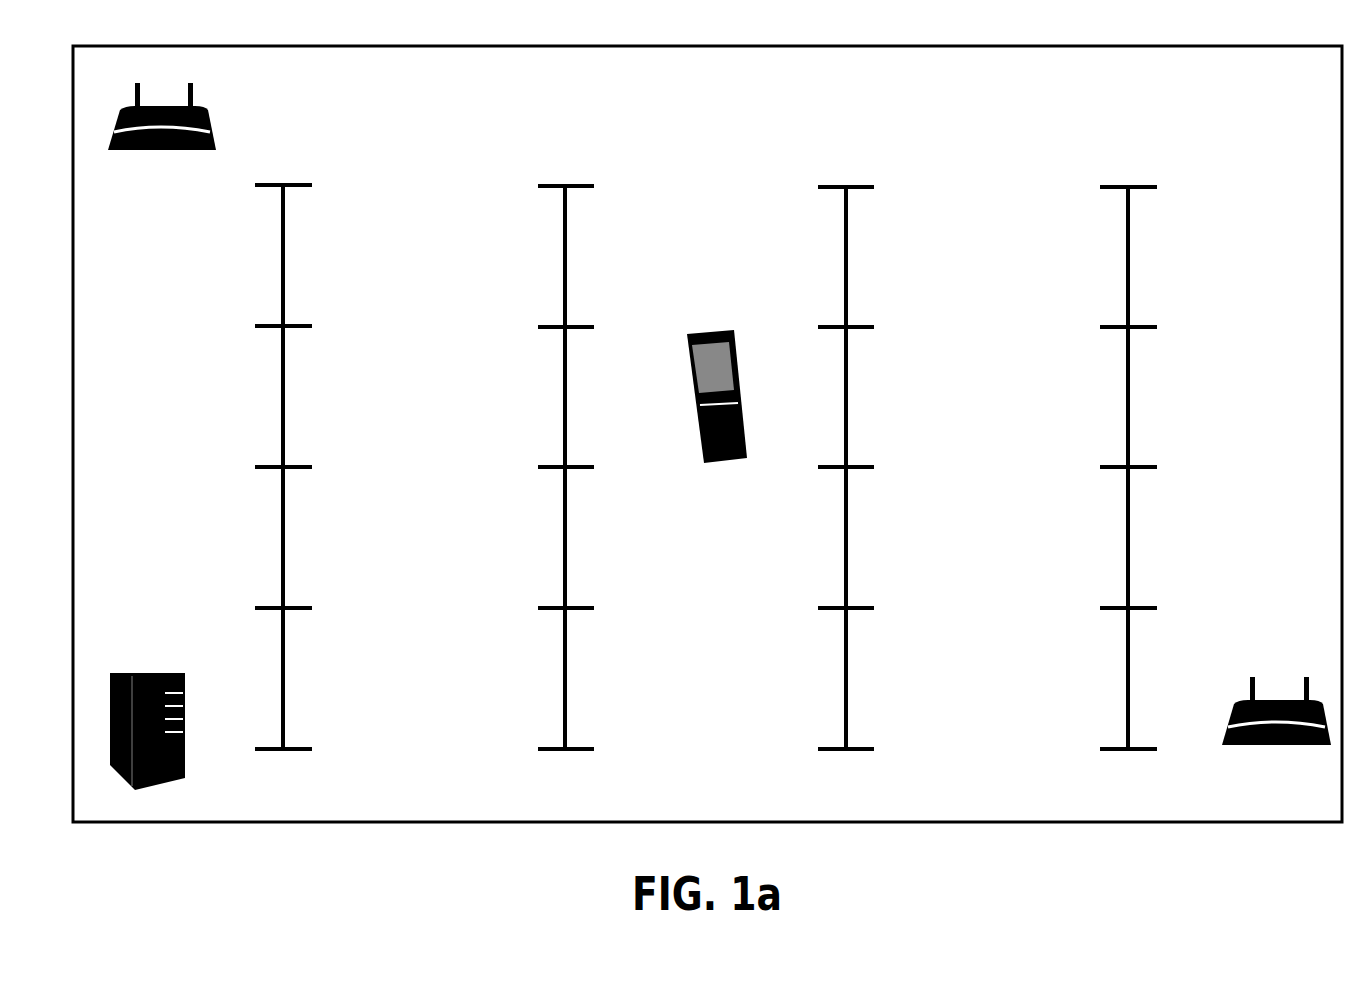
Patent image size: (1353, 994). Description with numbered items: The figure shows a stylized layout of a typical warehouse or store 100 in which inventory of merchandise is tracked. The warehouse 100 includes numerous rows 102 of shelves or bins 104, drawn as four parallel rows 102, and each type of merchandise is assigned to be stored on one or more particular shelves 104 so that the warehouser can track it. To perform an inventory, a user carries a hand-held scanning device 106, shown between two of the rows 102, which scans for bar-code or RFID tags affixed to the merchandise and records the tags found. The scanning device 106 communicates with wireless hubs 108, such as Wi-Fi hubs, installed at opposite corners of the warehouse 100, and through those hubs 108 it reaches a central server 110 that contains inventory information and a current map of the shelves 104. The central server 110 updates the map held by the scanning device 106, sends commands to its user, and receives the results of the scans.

The warehouse or store 100 is at (1331, 84).
The rows 102 is at (285, 182).
The shelves or bins 104 is at (562, 418).
The hand-held scanning device 106 is at (720, 328).
The wireless hubs 108 is at (191, 160).
The central server 110 is at (145, 665).